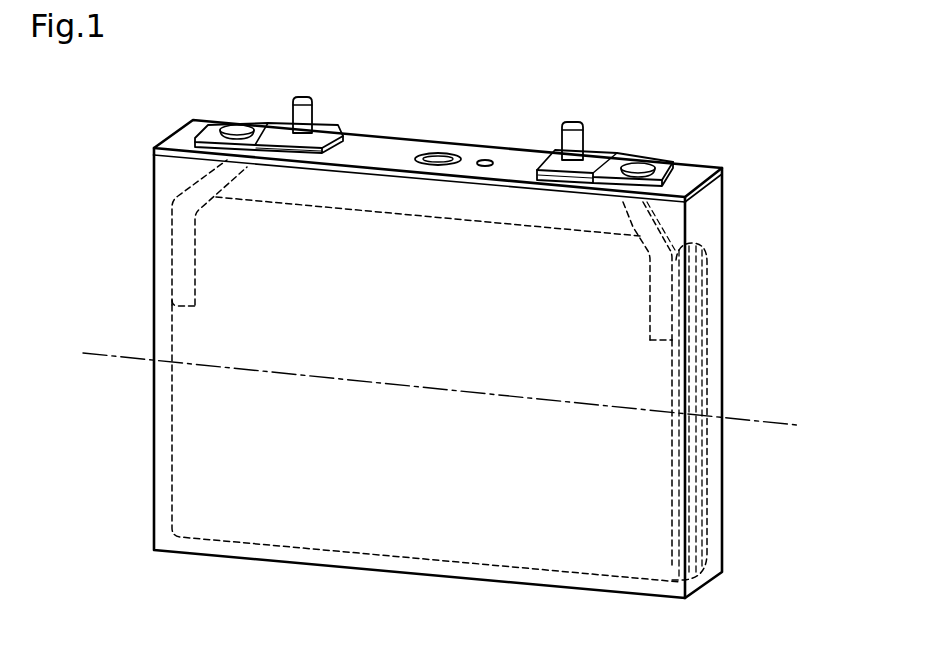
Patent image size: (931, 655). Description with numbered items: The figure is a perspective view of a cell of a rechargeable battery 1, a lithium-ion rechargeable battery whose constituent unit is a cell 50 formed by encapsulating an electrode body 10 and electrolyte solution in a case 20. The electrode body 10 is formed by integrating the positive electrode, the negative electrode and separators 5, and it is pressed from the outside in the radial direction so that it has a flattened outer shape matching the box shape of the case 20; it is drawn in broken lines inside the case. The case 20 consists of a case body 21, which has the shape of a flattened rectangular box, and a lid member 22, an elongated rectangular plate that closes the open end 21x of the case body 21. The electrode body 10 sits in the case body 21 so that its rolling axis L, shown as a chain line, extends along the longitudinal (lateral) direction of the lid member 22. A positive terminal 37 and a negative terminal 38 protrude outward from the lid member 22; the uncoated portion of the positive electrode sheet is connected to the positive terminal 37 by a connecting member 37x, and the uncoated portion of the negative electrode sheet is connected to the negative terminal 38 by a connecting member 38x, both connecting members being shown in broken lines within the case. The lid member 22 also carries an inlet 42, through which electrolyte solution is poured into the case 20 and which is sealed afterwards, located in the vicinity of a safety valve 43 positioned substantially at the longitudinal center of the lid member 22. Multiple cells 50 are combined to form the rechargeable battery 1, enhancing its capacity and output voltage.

The rechargeable battery 1 is at (479, 308).
The cell 50 is at (779, 63).
The electrode body 10 is at (708, 503).
The separators 5 is at (699, 409).
The case 20 is at (722, 572).
The case body 21 is at (154, 247).
The open end 21x is at (181, 149).
The lid member 22 is at (378, 147).
The positive terminal 37 is at (303, 97).
The negative terminal 38 is at (572, 121).
The connecting member 37x is at (200, 187).
The connecting member 38x is at (643, 220).
The inlet 42 is at (486, 159).
The safety valve 43 is at (438, 153).
The rolling axis L is at (767, 418).